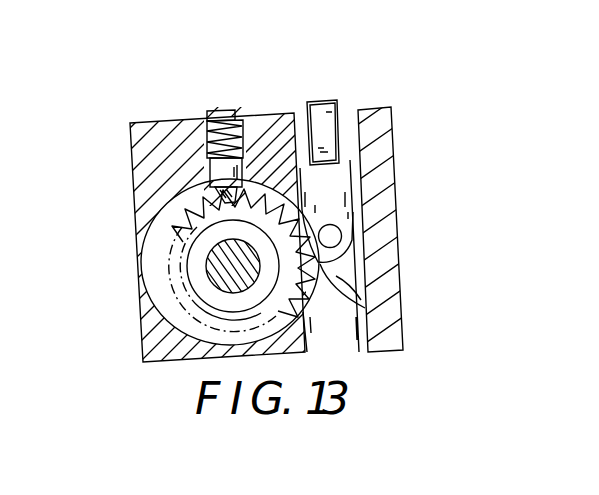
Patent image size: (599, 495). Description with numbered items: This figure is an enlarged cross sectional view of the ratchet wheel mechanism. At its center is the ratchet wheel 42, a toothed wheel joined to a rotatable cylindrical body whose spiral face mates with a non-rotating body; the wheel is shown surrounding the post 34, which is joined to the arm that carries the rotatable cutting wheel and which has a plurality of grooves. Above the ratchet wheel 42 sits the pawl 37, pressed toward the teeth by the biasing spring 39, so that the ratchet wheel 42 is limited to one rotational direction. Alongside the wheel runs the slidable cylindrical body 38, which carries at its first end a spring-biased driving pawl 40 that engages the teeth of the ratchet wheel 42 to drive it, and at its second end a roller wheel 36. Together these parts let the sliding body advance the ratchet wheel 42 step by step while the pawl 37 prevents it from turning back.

The post 34 is at (206, 269).
The roller wheel 36 is at (323, 101).
The pawl 37 is at (212, 172).
The slidable cylindrical body 38 is at (366, 178).
The biasing spring 39 is at (244, 110).
The driving pawl 40 is at (364, 317).
The ratchet wheel 42 is at (198, 204).